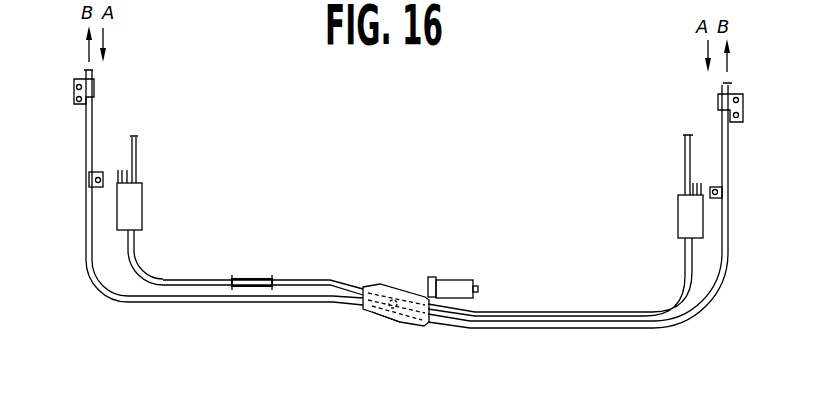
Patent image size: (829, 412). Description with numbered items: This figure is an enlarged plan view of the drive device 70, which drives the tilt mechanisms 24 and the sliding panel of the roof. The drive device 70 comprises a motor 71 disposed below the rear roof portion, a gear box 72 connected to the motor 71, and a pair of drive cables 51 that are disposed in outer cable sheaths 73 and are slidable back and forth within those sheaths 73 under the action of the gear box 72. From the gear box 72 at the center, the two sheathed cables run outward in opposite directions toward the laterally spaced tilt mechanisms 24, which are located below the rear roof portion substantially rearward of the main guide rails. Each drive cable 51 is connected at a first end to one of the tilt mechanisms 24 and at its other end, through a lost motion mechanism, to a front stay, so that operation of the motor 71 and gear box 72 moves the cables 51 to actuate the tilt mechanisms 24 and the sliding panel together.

The tilt mechanism 24 is at (132, 200).
The drive cable 51 is at (86, 142).
The drive device 70 is at (395, 268).
The motor 71 is at (452, 280).
The gear box 72 is at (400, 324).
The outer cable sheath 73 is at (297, 281).